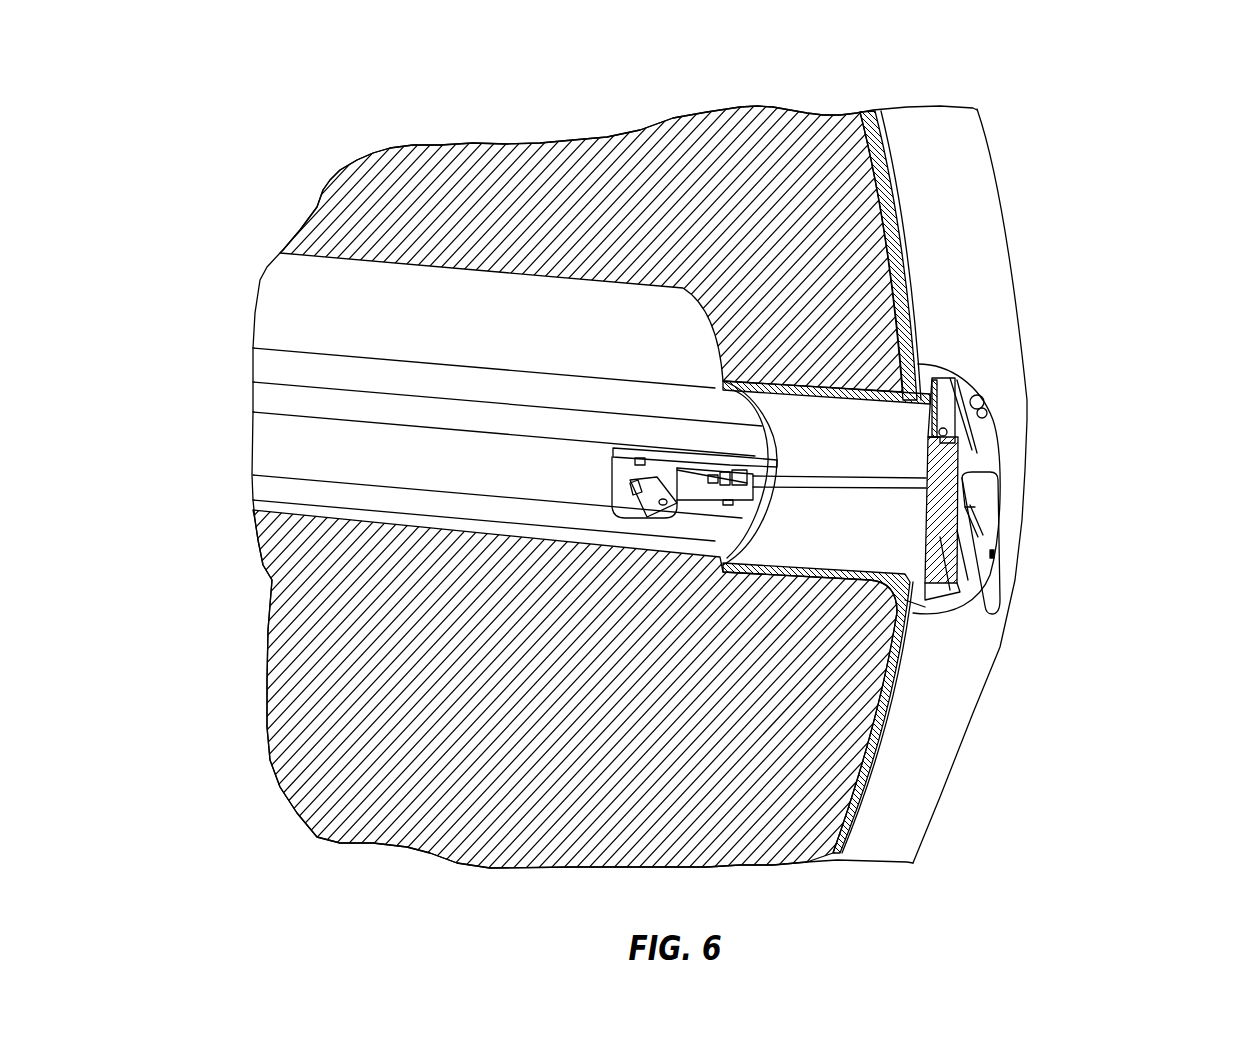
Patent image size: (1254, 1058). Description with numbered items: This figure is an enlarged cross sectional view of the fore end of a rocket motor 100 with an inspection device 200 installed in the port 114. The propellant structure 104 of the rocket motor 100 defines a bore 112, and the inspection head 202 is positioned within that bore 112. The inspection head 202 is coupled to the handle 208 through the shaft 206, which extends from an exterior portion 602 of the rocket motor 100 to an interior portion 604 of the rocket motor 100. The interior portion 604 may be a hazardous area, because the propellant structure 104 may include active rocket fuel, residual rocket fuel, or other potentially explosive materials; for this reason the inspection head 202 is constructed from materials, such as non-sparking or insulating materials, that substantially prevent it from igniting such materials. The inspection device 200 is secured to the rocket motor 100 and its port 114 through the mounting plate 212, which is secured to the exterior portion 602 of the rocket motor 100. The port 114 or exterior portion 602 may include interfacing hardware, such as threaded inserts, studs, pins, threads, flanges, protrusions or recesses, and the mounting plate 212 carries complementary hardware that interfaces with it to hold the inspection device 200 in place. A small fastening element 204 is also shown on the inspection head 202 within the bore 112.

The rocket motor 100 is at (764, 91).
The propellant structure 104 is at (460, 190).
The bore 112 is at (287, 442).
The port 114 is at (914, 350).
The inspection device 200 is at (1003, 527).
The inspection head 202 is at (623, 483).
The actuator arm 204 is at (720, 480).
The shaft 206 is at (837, 483).
The handle 208 is at (990, 502).
The mounting plate 212 is at (967, 388).
The exterior portion 602 is at (923, 760).
The interior portion 604 is at (773, 713).